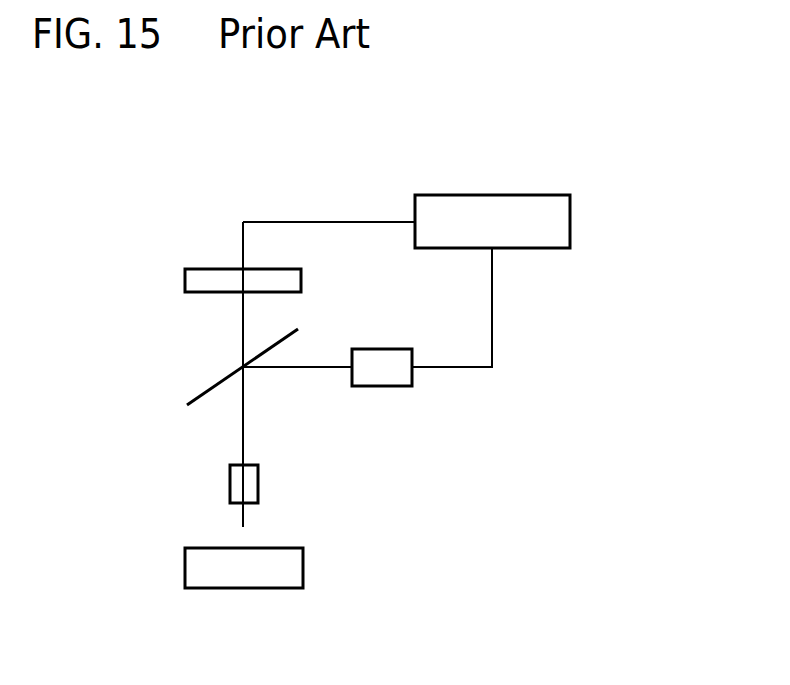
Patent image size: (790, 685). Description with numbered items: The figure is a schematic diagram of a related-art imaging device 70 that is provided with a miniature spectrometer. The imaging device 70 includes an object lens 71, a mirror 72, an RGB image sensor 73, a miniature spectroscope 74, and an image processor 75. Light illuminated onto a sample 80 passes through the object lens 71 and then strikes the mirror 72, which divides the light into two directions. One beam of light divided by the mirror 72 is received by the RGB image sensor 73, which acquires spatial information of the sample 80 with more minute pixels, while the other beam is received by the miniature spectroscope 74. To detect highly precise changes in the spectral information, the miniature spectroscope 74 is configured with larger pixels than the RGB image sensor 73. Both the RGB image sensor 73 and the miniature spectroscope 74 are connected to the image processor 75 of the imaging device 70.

The imaging device 70 is at (634, 204).
The object lens 71 is at (252, 465).
The mirror 72 is at (222, 382).
The RGB image sensor 73 is at (212, 269).
The miniature spectroscope 74 is at (378, 349).
The image processor 75 is at (520, 195).
The sample 80 is at (303, 568).